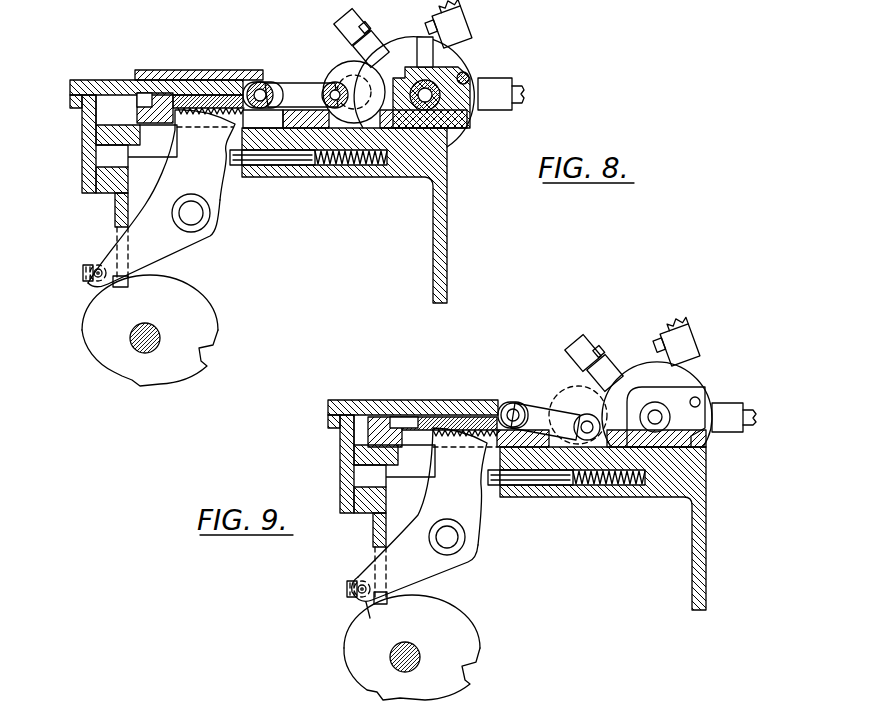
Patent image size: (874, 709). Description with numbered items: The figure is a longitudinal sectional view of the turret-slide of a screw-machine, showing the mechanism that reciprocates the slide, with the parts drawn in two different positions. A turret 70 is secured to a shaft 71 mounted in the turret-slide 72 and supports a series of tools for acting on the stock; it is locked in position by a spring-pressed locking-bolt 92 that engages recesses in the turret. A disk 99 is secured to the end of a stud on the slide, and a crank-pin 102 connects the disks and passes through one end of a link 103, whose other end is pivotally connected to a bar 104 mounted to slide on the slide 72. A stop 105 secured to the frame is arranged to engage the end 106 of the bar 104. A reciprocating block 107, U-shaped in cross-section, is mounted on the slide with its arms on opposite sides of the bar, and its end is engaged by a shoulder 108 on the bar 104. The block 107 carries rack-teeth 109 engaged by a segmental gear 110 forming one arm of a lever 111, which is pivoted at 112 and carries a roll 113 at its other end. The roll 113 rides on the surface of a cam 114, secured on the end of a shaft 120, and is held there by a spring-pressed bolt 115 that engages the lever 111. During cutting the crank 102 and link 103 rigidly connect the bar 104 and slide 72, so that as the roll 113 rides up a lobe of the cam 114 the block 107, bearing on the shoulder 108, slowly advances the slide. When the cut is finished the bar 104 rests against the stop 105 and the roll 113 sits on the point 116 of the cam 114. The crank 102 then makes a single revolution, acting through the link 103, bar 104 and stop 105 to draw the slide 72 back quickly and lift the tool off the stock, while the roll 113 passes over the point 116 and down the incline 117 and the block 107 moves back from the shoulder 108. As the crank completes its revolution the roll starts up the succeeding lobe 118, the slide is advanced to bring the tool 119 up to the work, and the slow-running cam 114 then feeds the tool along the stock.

In FIG. 8, the turret 70 is at (452, 68).
In FIG. 9, the turret 70 is at (657, 404).
In FIG. 8, the shaft 71 is at (445, 93).
In FIG. 9, the shaft 71 is at (660, 415).
In FIG. 8, the turret-slide 72 is at (137, 115).
In FIG. 9, the turret-slide 72 is at (395, 432).
In FIG. 8, the locking-bolt 92 is at (480, 83).
In FIG. 9, the locking-bolt 92 is at (734, 417).
In FIG. 8, the disk 99 is at (376, 86).
In FIG. 9, the disk 99 is at (578, 415).
In FIG. 8, the crank-pin 102 is at (335, 82).
In FIG. 9, the crank-pin 102 is at (588, 414).
In FIG. 8, the link 103 is at (290, 84).
In FIG. 9, the link 103 is at (545, 417).
In FIG. 8, the bar 104 is at (127, 80).
In FIG. 9, the bar 104 is at (418, 408).
In FIG. 8, the stop 105 is at (82, 130).
In FIG. 9, the stop 105 is at (343, 446).
In FIG. 8, the end of the bar 106 is at (70, 106).
In FIG. 9, the end of the bar 106 is at (327, 424).
In FIG. 8, the block 107 is at (180, 95).
In FIG. 9, the block 107 is at (437, 430).
In FIG. 8, the shoulder 108 is at (245, 108).
In FIG. 9, the shoulder 108 is at (521, 402).
In FIG. 8, the rack-teeth 109 is at (240, 80).
In FIG. 9, the rack-teeth 109 is at (476, 416).
In FIG. 8, the segmental gear 110 is at (198, 128).
In FIG. 9, the segmental gear 110 is at (462, 438).
In FIG. 8, the lever 111 is at (212, 199).
In FIG. 9, the lever 111 is at (447, 560).
In FIG. 8, the pivot 112 is at (197, 216).
In FIG. 9, the pivot 112 is at (460, 537).
In FIG. 8, the roll 113 is at (84, 280).
In FIG. 9, the roll 113 is at (349, 586).
In FIG. 8, the cam 114 is at (162, 360).
In FIG. 9, the cam 114 is at (453, 626).
In FIG. 8, the spring-pressed bolt 115 is at (234, 166).
In FIG. 9, the spring-pressed bolt 115 is at (490, 487).
In FIG. 8, the point of the cam 116 is at (103, 284).
In FIG. 9, the point of the cam 116 is at (364, 600).
In FIG. 9, the incline of the cam 117 is at (368, 606).
In FIG. 8, the lobe 118 is at (174, 291).
In FIG. 9, the lobe 118 is at (440, 606).
In FIG. 8, the tool 119 is at (468, 8).
In FIG. 9, the tool 119 is at (684, 325).
In FIG. 8, the shaft 120 is at (152, 332).
In FIG. 9, the shaft 120 is at (392, 655).